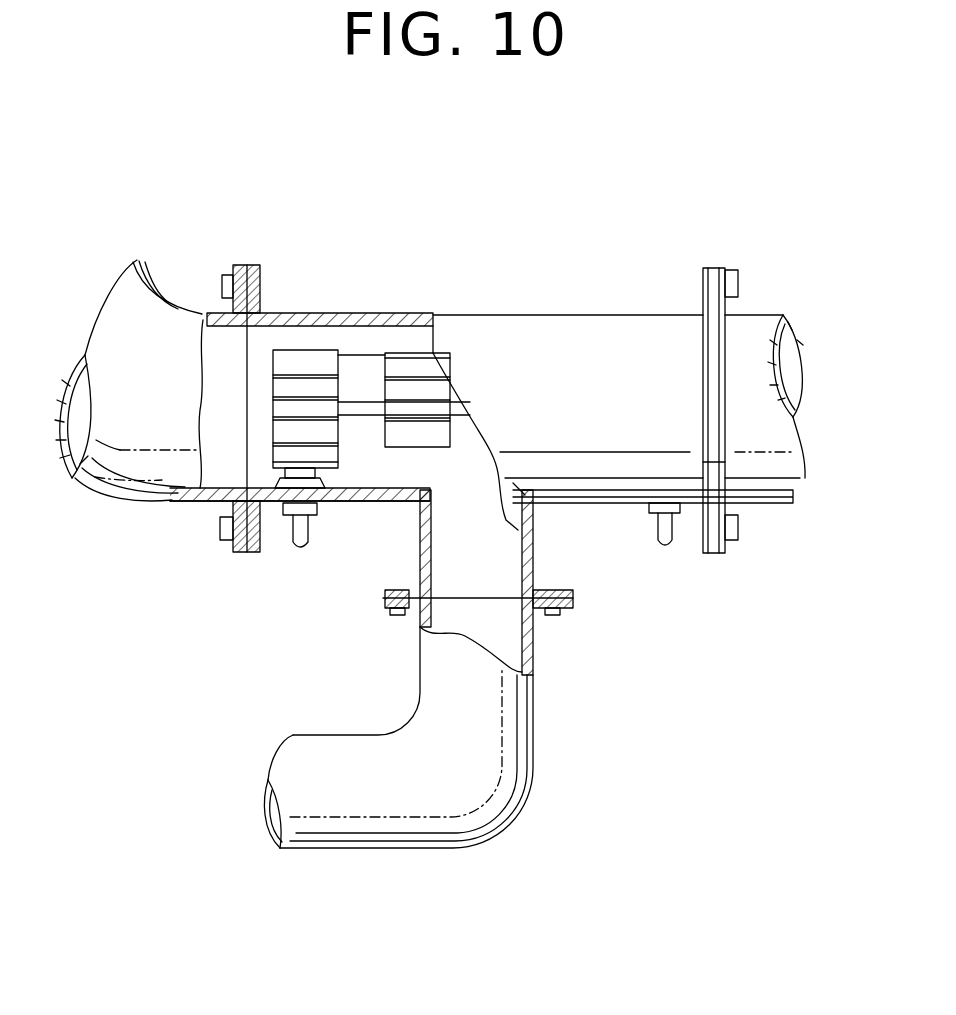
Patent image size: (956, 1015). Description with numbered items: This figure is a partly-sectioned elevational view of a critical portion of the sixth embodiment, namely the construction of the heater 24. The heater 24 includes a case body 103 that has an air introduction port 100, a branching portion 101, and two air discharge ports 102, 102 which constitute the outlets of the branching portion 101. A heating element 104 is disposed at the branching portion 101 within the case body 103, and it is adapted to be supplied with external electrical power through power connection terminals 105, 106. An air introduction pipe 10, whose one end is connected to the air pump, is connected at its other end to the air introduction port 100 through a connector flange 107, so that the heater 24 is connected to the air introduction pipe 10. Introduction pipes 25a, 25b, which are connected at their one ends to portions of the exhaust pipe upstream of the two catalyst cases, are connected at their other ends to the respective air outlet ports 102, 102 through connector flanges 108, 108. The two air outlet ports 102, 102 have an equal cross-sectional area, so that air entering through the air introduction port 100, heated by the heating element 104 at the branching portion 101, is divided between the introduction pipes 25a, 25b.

The air introduction pipe 10 is at (533, 782).
The heater 24 is at (478, 310).
The introduction pipe 25a is at (148, 322).
The introduction pipe 25b is at (752, 342).
The air introduction port 100 is at (508, 560).
The branching portion 101 is at (415, 336).
The air discharge port 102 is at (262, 345).
The case body 103 is at (580, 312).
The heating element 104 is at (322, 362).
The power connection terminal 105 is at (300, 550).
The power connection terminal 106 is at (664, 548).
The connector flange 107 is at (573, 607).
The connector flange 108 is at (246, 555).